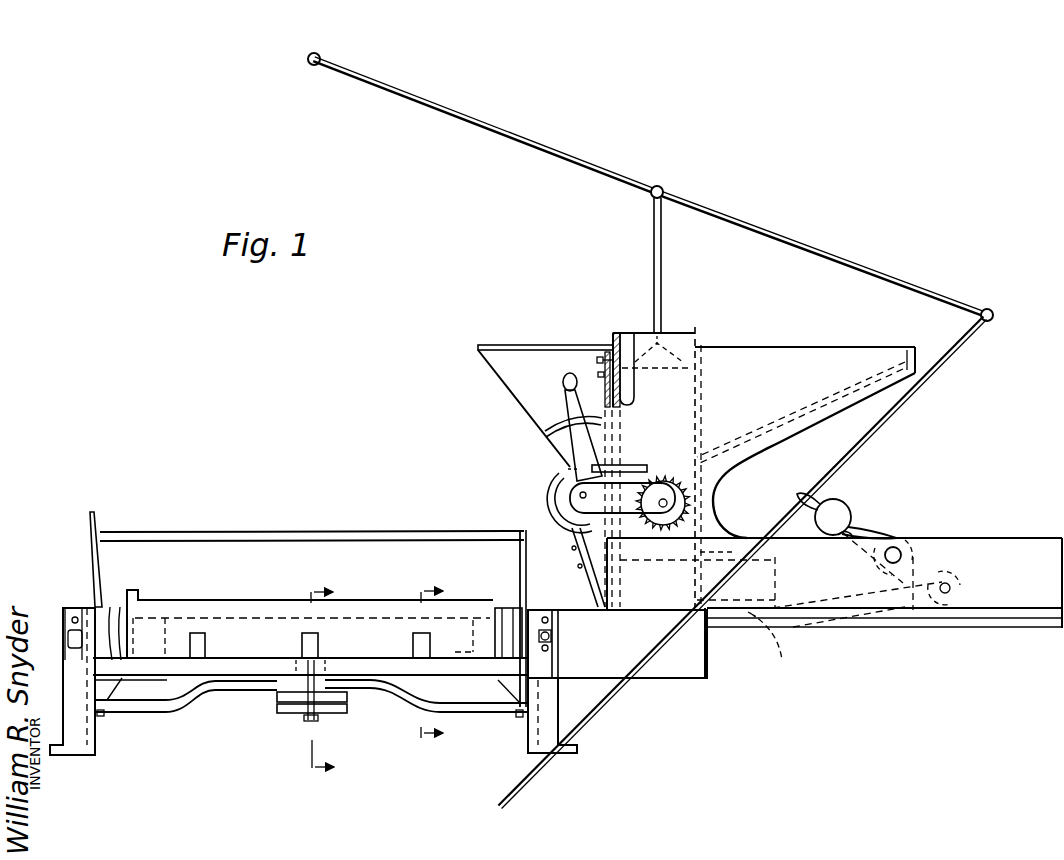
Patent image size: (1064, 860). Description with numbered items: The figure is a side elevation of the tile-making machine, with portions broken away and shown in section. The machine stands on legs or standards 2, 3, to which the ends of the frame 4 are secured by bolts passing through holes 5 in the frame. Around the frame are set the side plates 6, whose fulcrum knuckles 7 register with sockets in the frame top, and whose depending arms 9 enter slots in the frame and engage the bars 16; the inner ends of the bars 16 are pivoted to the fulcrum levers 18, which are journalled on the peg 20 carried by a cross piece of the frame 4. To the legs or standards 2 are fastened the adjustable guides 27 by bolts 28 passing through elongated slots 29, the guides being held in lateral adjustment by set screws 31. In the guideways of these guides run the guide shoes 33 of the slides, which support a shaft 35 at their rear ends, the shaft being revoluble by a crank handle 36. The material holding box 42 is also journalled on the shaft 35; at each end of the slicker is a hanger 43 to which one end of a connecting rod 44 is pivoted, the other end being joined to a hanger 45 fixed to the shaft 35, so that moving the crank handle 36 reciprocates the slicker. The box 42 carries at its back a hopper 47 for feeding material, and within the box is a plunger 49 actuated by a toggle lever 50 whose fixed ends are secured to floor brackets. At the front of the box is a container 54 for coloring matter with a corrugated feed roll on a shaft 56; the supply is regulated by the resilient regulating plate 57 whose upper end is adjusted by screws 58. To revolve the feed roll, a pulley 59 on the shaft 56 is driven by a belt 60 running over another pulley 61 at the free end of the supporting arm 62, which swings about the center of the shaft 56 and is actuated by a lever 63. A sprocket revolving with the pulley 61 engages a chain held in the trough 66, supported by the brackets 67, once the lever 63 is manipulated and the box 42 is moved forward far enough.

The leg or standard 2 is at (100, 738).
The leg or standard 3 is at (527, 740).
The frame 4 is at (167, 680).
The holes 5 is at (440, 662).
The side plates 6 is at (112, 607).
The fulcrum knuckles 7 is at (206, 642).
The depending arms 9 is at (105, 713).
The bars 16 is at (196, 702).
The fulcrum levers 18 is at (282, 706).
The peg 20 is at (346, 703).
The adjustable guides 27 is at (95, 605).
The bolts 28 is at (551, 637).
The elongated holes or slots 29 is at (90, 607).
The set screws 31 is at (90, 627).
The guide shoes 33 is at (1002, 628).
The shaft 35 is at (895, 552).
The crank handle 36 is at (853, 509).
The material holding box 42 is at (697, 467).
The hanger 43 is at (773, 650).
The connecting rod 44 is at (963, 589).
The hanger 45 is at (930, 562).
The hopper 47 is at (835, 360).
The plunger 49 is at (698, 330).
The toggle lever 50 is at (950, 357).
The container for coloring matter 54 is at (510, 347).
The shaft 56 is at (580, 493).
The resilient regulating plate 57 is at (605, 395).
The screws 58 is at (612, 400).
The pulley 59 is at (554, 487).
The belt 60 is at (625, 470).
The pulley 61 is at (662, 479).
The supporting arm 62 is at (625, 483).
The lever 63 is at (565, 393).
The trough 66 is at (421, 531).
The brackets 67 is at (577, 531).